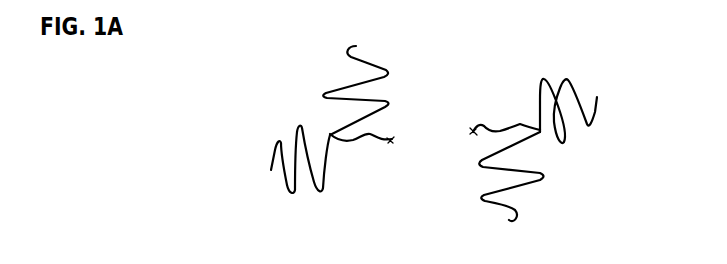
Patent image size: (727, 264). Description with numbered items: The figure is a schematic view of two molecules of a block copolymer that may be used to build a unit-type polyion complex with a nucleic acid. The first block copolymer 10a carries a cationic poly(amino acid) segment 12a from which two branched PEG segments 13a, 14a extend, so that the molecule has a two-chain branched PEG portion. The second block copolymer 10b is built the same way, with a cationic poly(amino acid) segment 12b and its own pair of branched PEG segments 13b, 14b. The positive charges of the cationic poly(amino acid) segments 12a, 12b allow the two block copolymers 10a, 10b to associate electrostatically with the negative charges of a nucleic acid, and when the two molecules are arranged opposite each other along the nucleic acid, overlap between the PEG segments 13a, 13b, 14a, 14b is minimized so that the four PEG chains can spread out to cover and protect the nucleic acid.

The block copolymer 10a is at (409, 33).
The cationic poly(amino acid) segment 12a is at (383, 144).
The PEG segment 13a is at (346, 58).
The PEG segment 14a is at (270, 152).
The block copolymer 10b is at (585, 35).
The cationic poly(amino acid) segment 12b is at (490, 125).
The PEG segment 13b is at (598, 114).
The PEG segment 14b is at (520, 213).